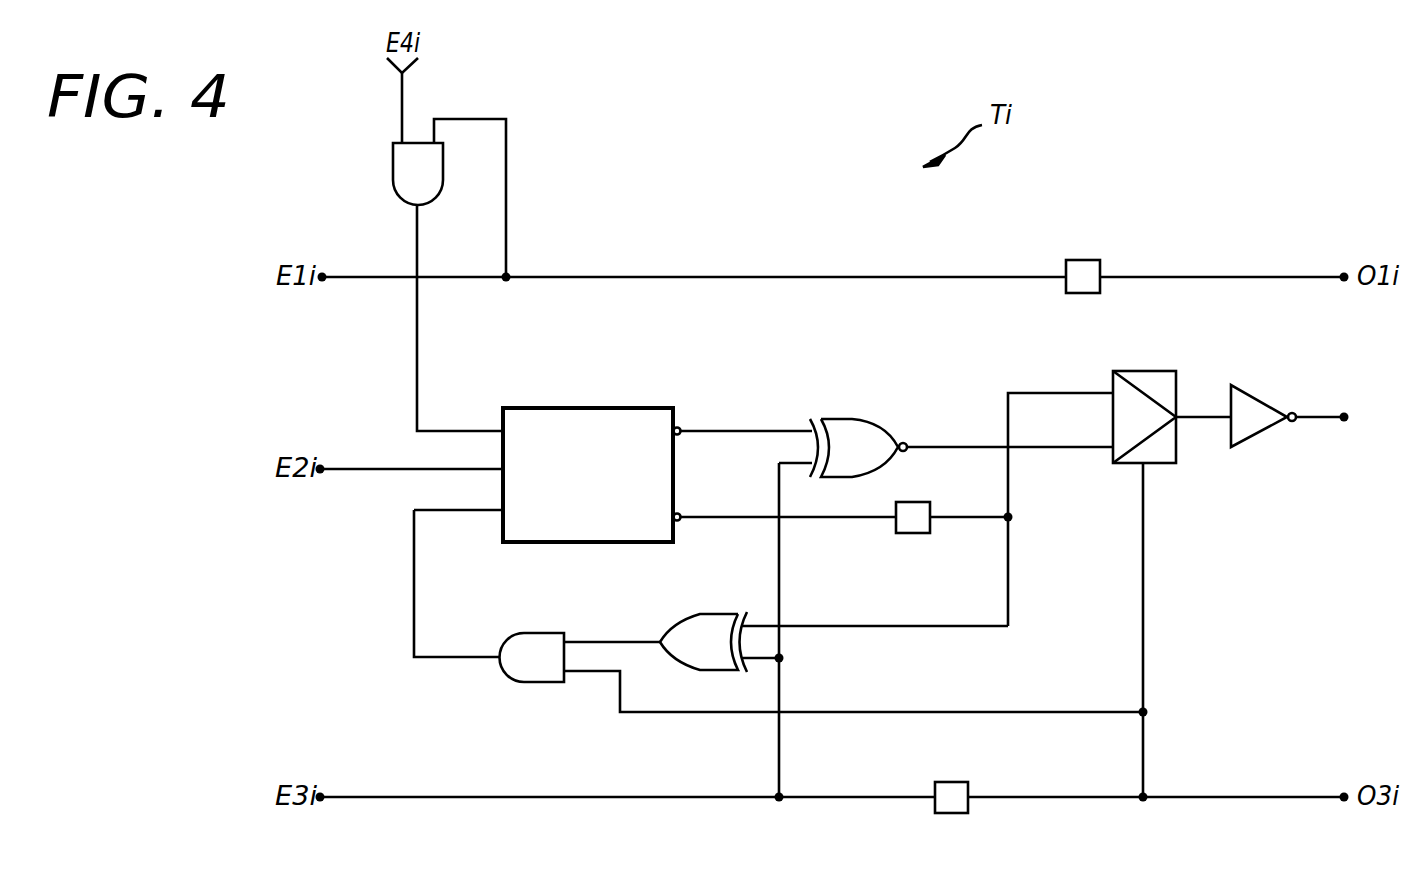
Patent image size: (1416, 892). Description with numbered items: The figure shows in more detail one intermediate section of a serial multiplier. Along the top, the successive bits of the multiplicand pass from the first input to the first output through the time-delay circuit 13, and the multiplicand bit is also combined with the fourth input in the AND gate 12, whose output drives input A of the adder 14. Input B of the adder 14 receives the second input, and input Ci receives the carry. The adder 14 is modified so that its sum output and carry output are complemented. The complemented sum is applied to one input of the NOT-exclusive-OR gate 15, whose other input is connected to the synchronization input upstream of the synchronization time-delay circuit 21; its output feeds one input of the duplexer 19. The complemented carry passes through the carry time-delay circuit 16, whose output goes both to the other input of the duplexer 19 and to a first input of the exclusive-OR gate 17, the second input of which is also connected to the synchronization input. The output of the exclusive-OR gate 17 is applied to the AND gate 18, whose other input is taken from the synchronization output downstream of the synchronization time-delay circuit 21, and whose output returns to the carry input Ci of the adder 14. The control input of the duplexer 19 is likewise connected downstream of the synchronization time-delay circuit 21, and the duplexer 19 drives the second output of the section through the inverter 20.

The AND gate 12 is at (392, 165).
The time-delay circuit 13 is at (1082, 270).
The adder 14 is at (590, 408).
The NOT-exclusive-OR gate 15 is at (853, 428).
The carry time-delay circuit 16 is at (914, 525).
The exclusive-OR gate 17 is at (705, 625).
The AND gate 18 is at (518, 663).
The duplexer 19 is at (1141, 371).
The inverter 20 is at (1262, 431).
The synchronization time-delay circuit 21 is at (952, 790).